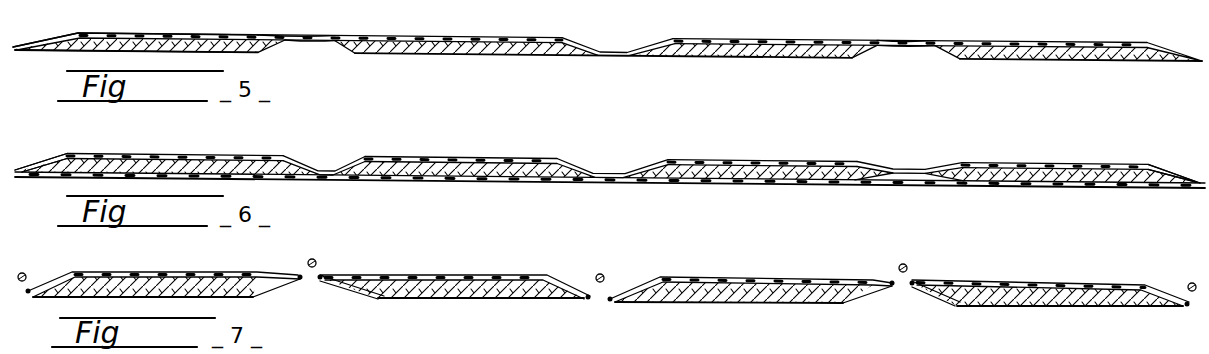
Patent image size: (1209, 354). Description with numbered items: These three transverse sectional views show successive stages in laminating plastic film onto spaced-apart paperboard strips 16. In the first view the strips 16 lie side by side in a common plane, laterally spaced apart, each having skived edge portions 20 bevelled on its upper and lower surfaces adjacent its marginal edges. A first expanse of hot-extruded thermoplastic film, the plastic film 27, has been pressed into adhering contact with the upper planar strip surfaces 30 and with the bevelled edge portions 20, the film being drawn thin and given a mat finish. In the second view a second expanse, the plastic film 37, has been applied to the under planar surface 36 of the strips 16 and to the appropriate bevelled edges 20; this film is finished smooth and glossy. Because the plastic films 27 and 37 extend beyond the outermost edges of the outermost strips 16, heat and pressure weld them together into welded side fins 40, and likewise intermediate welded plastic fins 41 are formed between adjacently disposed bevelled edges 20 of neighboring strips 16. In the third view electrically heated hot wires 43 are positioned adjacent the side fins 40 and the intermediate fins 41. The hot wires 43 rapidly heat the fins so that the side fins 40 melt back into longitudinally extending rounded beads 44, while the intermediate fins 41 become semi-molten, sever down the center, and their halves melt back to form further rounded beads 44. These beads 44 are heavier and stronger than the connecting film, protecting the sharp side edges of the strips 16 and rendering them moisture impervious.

In FIG. 5, the strip 16 is at (220, 45).
In FIG. 6, the strip 16 is at (402, 163).
In FIG. 7, the strip 16 is at (145, 283).
In FIG. 5, the skived edge portion 20 is at (345, 43).
In FIG. 5, the plastic film 27 is at (548, 33).
In FIG. 6, the plastic film 27 is at (705, 153).
In FIG. 7, the plastic film 27 is at (470, 275).
In FIG. 5, the upper planar strip surface 30 is at (390, 33).
In FIG. 6, the upper planar strip surface 30 is at (460, 158).
In FIG. 7, the upper planar strip surface 30 is at (708, 278).
In FIG. 5, the under planar surface 36 is at (515, 55).
In FIG. 6, the under planar surface 36 is at (478, 177).
In FIG. 7, the under planar surface 36 is at (790, 303).
In FIG. 6, the plastic film 37 is at (388, 178).
In FIG. 7, the plastic film 37 is at (430, 300).
In FIG. 6, the welded side fin 40 is at (27, 167).
In FIG. 6, the intermediate welded plastic fin 41 is at (312, 162).
In FIG. 7, the hot wire 43 is at (26, 272).
In FIG. 7, the rounded bead 44 is at (28, 293).